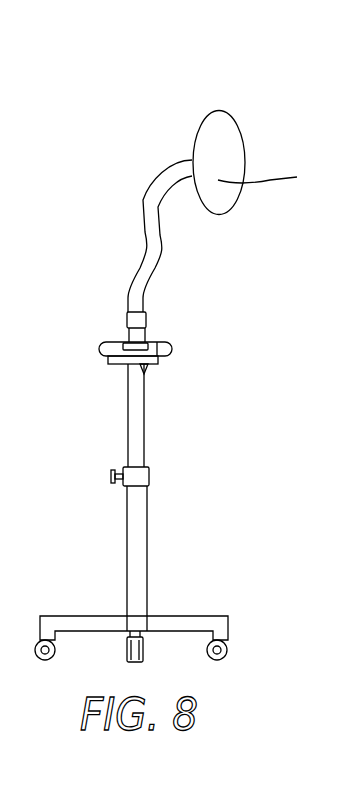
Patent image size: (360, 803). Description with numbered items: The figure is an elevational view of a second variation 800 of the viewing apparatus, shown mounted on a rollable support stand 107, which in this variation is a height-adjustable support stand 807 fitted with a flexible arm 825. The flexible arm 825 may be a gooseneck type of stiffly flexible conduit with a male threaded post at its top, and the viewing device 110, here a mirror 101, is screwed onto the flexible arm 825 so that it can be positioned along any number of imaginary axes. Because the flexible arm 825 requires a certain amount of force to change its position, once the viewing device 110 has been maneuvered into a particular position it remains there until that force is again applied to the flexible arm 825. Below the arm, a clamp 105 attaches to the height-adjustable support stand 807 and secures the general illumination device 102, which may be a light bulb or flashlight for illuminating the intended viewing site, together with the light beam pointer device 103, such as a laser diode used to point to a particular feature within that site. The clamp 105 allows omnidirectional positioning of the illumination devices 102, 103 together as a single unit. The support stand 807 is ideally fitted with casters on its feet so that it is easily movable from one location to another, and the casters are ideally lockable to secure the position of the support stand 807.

The second variation of the viewing apparatus 800 is at (137, 77).
The mirror 101 is at (223, 133).
The viewing device 110 is at (279, 179).
The flexible arm 825 is at (150, 272).
The general illumination device 102 is at (163, 343).
The light beam pointer device 103 is at (152, 365).
The clamp 105 is at (142, 362).
The height-adjustable support stand 807 is at (133, 505).
The support stand 107 is at (132, 570).